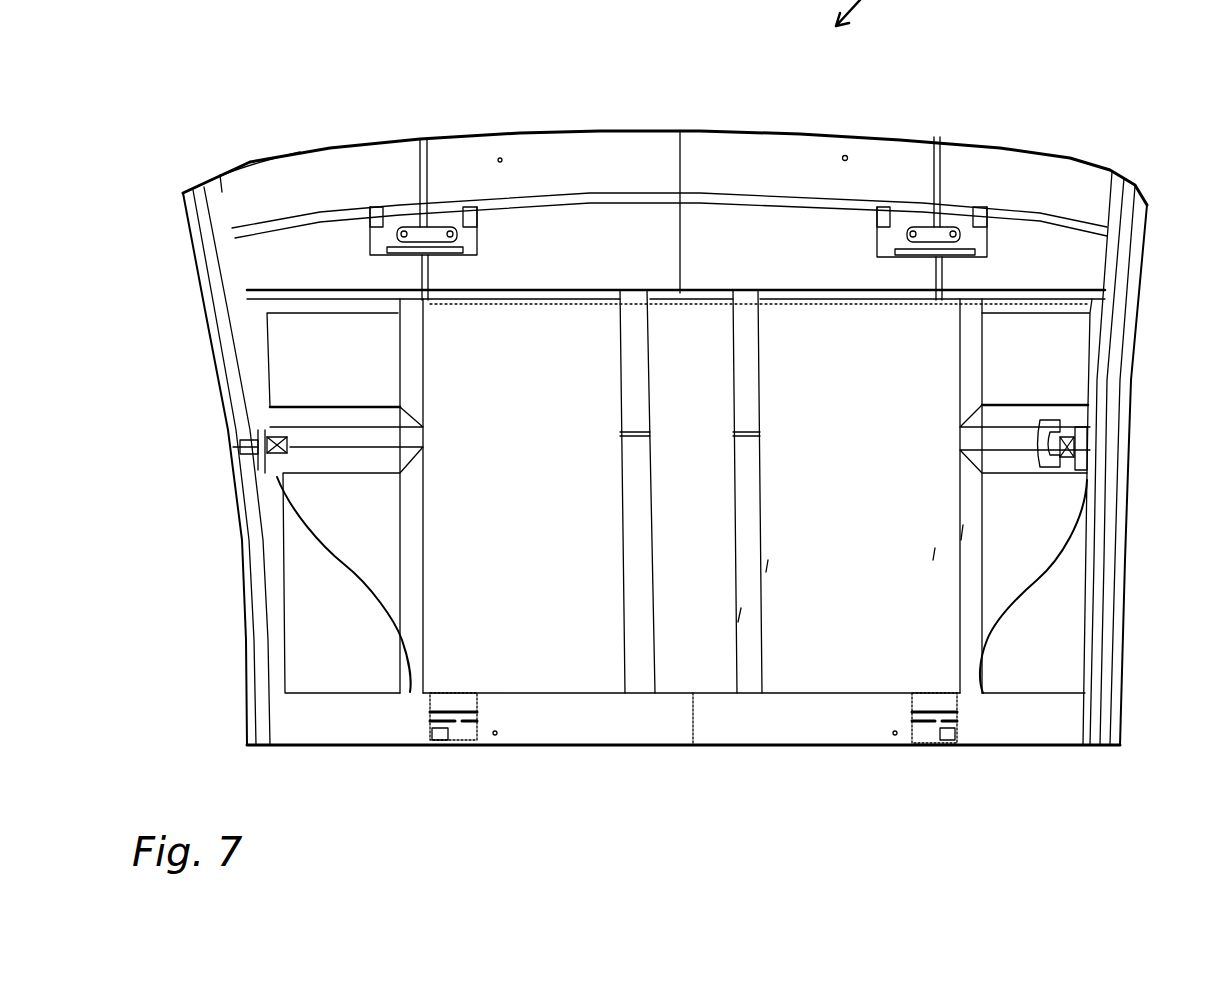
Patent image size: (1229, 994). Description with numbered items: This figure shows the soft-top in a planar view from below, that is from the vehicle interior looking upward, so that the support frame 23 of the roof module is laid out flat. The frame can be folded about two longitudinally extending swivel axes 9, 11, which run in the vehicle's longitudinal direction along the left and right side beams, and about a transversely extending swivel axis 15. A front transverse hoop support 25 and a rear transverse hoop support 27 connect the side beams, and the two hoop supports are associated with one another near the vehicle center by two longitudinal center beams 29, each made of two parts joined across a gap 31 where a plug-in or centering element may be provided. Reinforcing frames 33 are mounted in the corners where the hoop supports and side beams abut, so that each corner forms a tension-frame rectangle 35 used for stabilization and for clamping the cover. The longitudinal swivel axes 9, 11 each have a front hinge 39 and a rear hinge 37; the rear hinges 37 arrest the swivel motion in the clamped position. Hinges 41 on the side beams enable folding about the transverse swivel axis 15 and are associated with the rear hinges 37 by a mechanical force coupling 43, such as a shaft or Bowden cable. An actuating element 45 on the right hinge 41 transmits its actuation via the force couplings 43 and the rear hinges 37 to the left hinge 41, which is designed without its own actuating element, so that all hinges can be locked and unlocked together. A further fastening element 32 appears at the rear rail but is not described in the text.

The longitudinal swivel axis 9 is at (937, 137).
The longitudinal swivel axis 11 is at (417, 140).
The transverse swivel axis 15 is at (293, 447).
The support frame 23 is at (553, 132).
The front transverse hoop support 25 is at (623, 152).
The rear transverse hoop support 27 is at (672, 723).
The longitudinal center beam 29 is at (630, 385).
The gap 31 is at (760, 435).
The fastening element 32 is at (450, 727).
The reinforcing frame 33 is at (413, 393).
The rectangle 35 is at (313, 398).
The rear hinge 37 is at (932, 730).
The front hinge 39 is at (440, 233).
The hinge 41 is at (253, 447).
The mechanical force coupling 43 is at (350, 563).
The actuating element 45 is at (1032, 420).